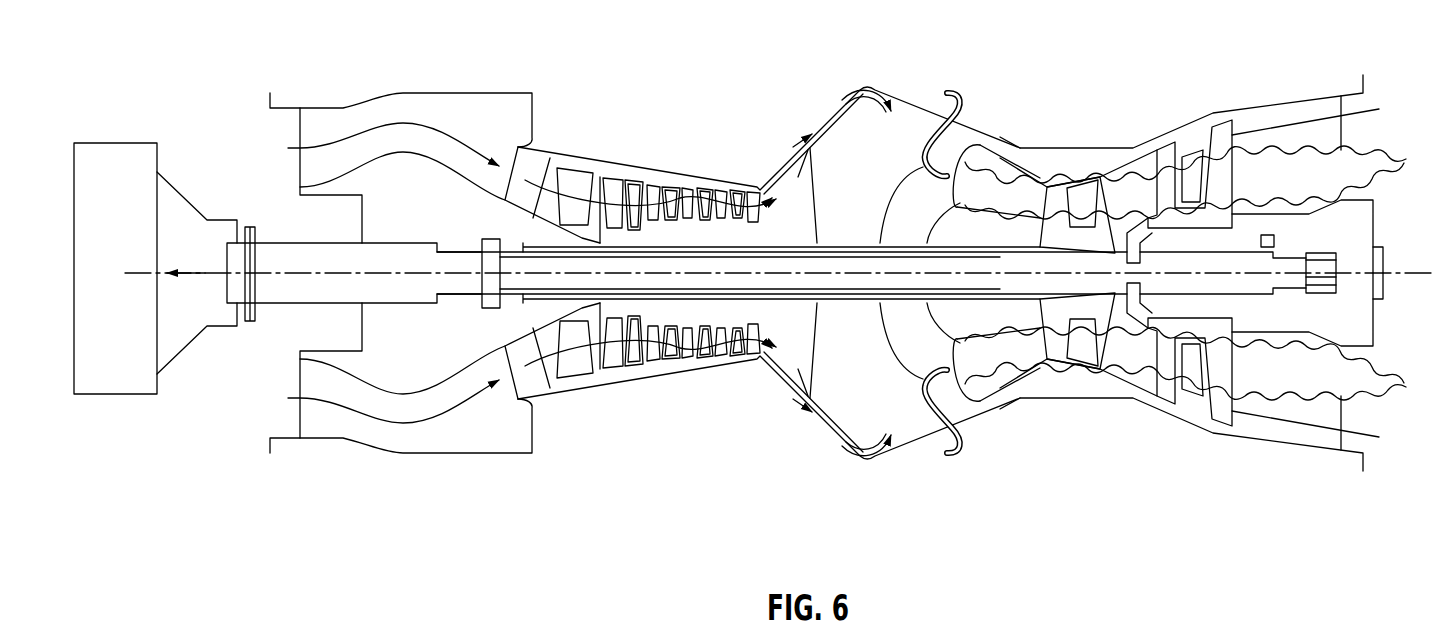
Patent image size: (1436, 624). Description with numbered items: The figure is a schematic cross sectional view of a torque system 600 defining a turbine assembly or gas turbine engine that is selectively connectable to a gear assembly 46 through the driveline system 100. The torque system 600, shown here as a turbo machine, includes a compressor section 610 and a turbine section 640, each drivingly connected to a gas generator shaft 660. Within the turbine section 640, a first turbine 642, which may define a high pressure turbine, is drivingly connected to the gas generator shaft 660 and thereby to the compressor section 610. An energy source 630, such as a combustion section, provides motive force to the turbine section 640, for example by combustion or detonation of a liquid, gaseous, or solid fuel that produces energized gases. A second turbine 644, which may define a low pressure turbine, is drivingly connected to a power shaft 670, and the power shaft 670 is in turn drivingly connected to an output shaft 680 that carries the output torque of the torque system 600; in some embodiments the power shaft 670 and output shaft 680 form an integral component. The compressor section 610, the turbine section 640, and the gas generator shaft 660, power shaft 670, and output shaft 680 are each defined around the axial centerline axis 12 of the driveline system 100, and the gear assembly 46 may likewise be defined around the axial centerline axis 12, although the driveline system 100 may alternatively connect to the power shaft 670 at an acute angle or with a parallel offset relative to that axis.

The axial centerline axis 12 is at (151, 270).
The gear assembly 46 is at (107, 143).
The driveline system 100 is at (233, 204).
The torque system 600 is at (295, 498).
The compressor section 610 is at (632, 378).
The energy source 630 is at (918, 403).
The turbine section 640 is at (1175, 508).
The first turbine 642 is at (1115, 355).
The second turbine 644 is at (1242, 148).
The gas generator shaft 660 is at (845, 236).
The power shaft 670 is at (1243, 288).
The output shaft 680 is at (267, 253).